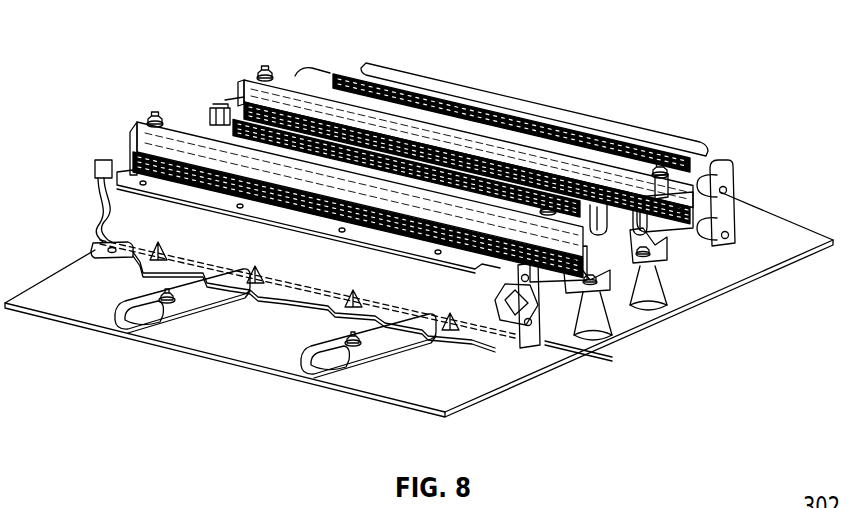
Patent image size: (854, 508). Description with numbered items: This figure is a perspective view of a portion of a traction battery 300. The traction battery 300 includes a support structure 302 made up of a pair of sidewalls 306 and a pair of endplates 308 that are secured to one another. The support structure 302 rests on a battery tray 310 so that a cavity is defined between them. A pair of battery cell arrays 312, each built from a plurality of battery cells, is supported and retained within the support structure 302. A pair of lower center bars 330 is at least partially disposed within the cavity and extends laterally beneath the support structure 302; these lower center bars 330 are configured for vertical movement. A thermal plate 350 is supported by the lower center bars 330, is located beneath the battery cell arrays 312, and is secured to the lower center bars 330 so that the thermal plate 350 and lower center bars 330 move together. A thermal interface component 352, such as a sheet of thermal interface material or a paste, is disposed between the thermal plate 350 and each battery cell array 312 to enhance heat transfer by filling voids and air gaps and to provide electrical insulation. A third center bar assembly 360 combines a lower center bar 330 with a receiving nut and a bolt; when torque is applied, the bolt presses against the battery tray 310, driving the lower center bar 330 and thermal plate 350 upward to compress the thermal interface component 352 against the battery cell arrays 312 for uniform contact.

The traction battery 300 is at (152, 54).
The support structure 302 is at (93, 174).
The sidewalls 306 is at (500, 100).
The endplates 308 is at (218, 108).
The battery tray 310 is at (485, 380).
The battery cell arrays 312 is at (137, 147).
The lower center bars 330 is at (130, 318).
The thermal plate 350 is at (583, 350).
The thermal interface component 352 is at (628, 328).
The third center bar assembly 360 is at (165, 312).